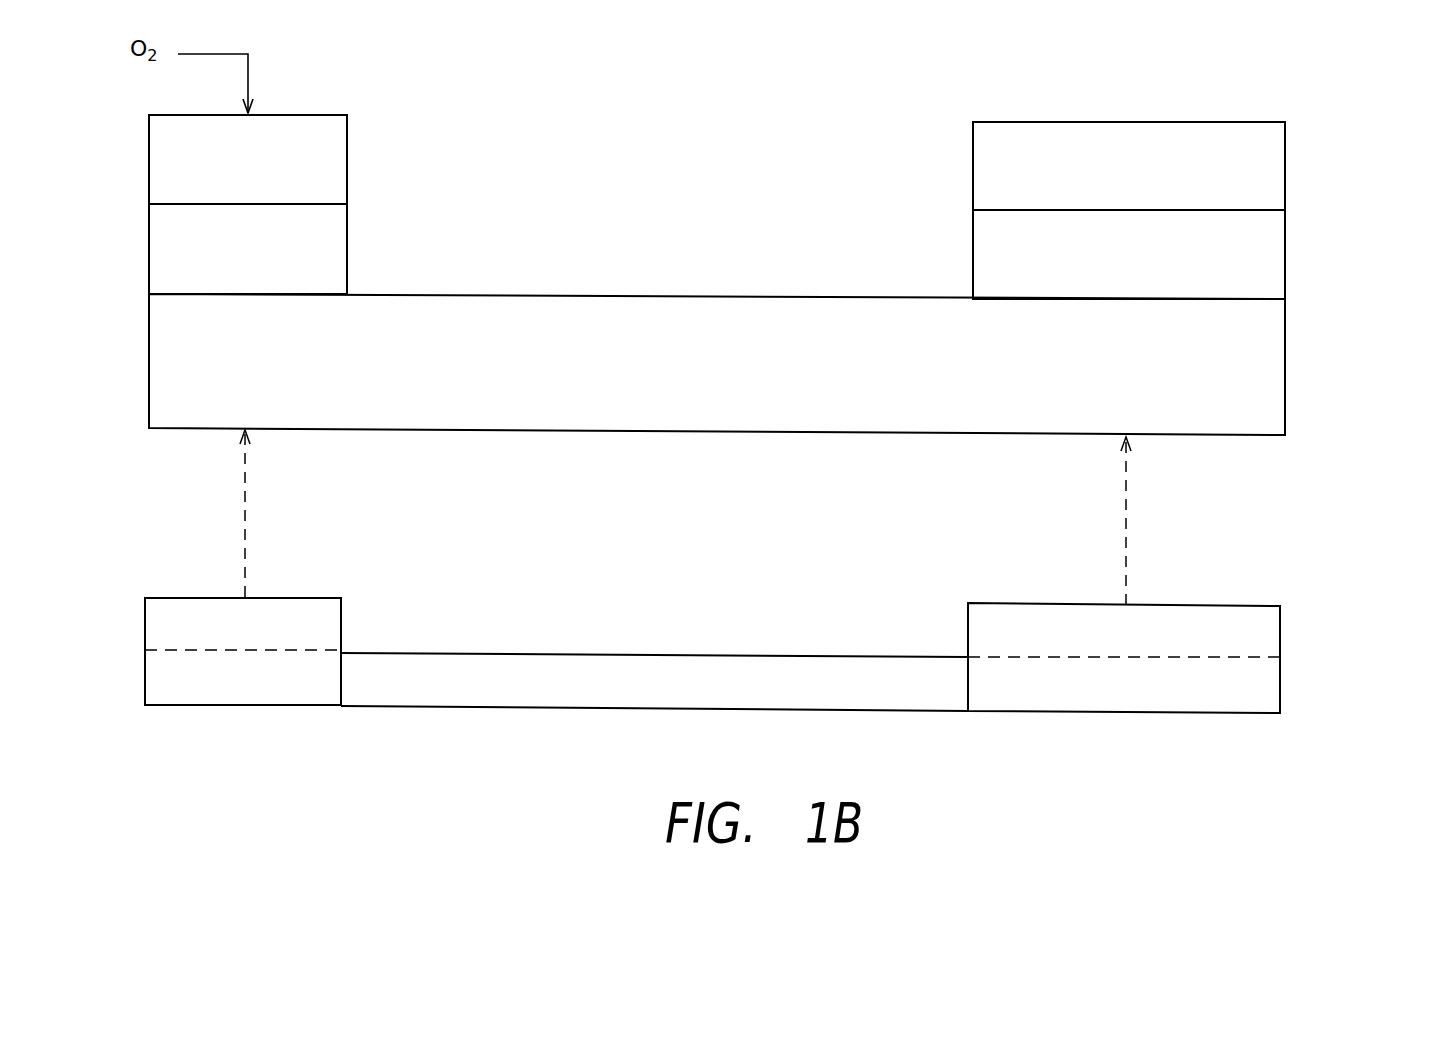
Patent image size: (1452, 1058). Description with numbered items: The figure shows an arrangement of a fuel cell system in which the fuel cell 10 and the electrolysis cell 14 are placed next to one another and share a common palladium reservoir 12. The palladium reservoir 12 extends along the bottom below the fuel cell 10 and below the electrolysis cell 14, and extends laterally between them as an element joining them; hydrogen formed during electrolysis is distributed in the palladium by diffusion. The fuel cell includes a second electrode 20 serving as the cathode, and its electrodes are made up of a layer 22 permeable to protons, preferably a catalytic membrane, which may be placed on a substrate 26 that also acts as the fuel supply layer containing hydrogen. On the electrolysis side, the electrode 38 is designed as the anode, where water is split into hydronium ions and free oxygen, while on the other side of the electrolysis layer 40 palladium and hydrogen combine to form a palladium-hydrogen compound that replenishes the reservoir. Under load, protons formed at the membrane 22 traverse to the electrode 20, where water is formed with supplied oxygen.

The fuel cell 10 is at (341, 598).
The palladium reservoir 12 is at (733, 655).
The electrolysis cell 14 is at (1280, 606).
The second electrode 20 is at (347, 147).
The proton-permeable layer 22 is at (347, 237).
The substrate 26 is at (1285, 372).
The second electrolysis electrode 38 is at (1285, 160).
The electrolysis layer 40 is at (1285, 252).